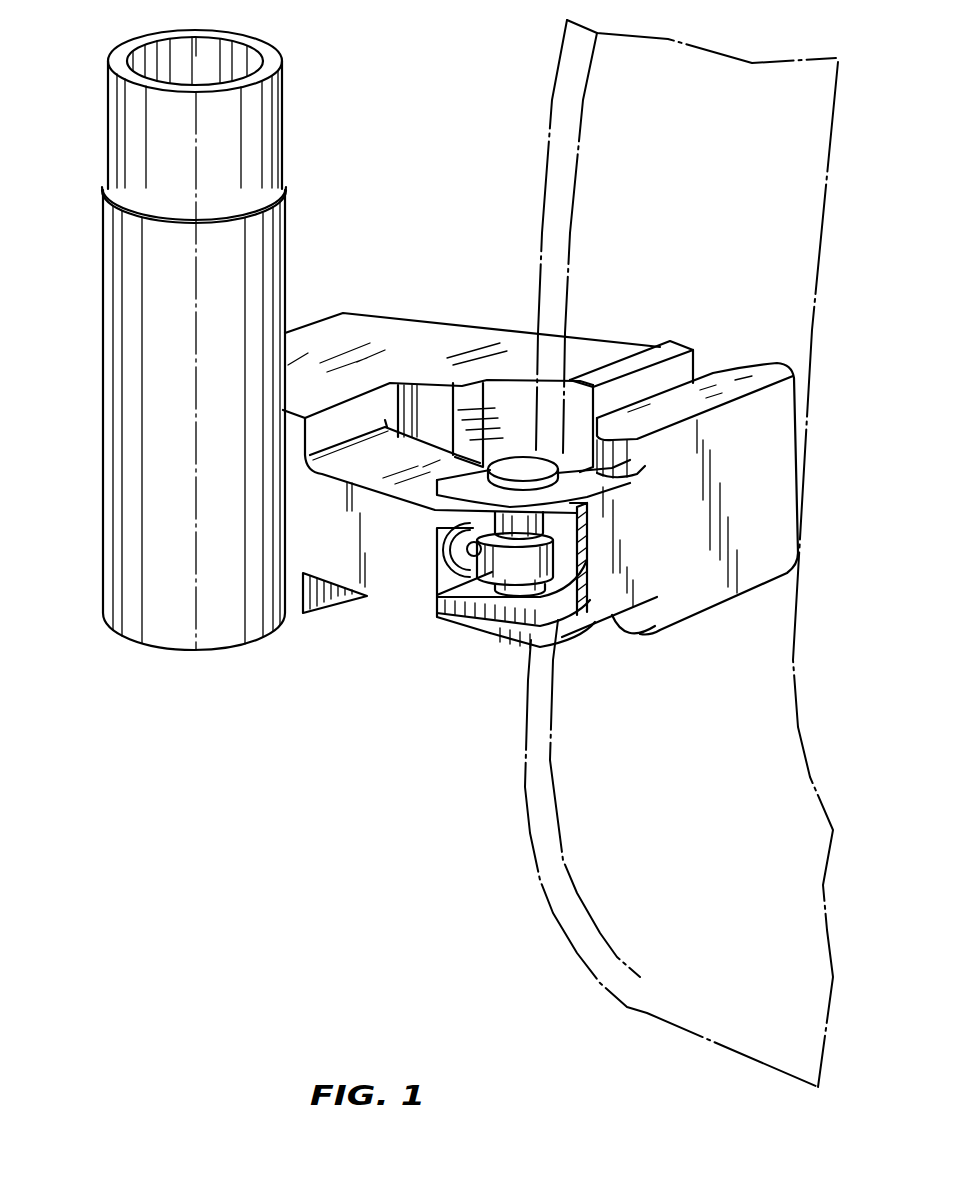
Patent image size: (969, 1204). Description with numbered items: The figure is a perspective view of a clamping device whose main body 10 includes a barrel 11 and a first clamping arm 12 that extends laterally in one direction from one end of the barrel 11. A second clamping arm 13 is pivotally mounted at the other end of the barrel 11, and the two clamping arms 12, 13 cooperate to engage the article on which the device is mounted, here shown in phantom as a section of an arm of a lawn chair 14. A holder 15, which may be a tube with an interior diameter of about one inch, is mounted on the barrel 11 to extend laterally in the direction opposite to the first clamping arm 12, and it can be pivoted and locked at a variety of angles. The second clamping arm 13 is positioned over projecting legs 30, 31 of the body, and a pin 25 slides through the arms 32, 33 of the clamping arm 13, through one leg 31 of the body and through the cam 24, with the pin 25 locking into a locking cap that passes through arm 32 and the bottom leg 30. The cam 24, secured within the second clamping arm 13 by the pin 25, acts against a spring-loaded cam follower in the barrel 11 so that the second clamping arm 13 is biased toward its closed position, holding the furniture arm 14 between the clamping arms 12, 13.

The main body 10 is at (398, 125).
The barrel 11 is at (315, 548).
The first clamping arm 12 is at (397, 333).
The second clamping arm 13 is at (740, 567).
The section of an arm of a lawn chair 14 is at (815, 253).
The holder 15 is at (122, 462).
The cam 24 is at (510, 593).
The pin 25 is at (523, 457).
The projecting leg 30 is at (462, 607).
The projecting leg 31 is at (455, 522).
The arm of clamp 32 is at (572, 632).
The arm of clamp 33 is at (568, 502).